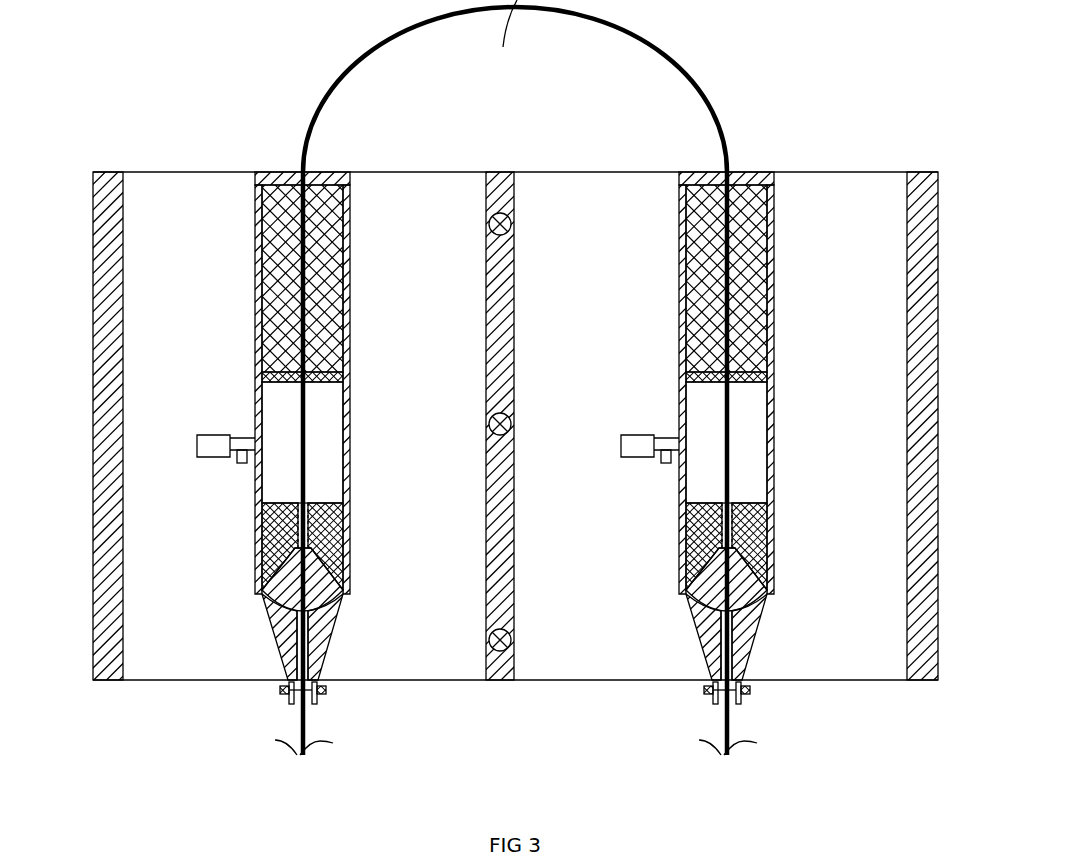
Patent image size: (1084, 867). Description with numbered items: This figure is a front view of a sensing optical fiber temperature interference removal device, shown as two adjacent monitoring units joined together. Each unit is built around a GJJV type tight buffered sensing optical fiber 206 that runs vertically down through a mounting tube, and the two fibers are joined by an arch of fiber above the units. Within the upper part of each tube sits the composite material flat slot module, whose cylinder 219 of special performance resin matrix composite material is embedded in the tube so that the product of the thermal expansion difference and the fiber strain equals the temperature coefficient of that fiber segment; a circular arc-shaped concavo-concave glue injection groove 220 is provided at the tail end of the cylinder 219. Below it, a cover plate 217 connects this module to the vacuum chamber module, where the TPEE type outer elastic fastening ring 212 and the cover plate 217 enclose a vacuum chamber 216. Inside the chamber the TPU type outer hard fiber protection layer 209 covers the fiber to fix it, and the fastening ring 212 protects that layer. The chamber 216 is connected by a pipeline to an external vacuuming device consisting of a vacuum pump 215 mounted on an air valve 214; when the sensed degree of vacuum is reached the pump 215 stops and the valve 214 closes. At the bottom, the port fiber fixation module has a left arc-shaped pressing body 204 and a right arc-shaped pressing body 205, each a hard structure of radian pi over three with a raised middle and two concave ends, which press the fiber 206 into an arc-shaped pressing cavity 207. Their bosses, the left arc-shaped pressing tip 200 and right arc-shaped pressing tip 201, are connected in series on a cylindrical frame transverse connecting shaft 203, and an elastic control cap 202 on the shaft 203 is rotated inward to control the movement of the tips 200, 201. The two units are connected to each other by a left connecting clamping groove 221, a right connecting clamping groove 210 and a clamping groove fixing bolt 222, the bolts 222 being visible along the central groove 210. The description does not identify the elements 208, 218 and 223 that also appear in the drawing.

The left arc-shaped pressing tip 200 is at (291, 701).
The right arc-shaped pressing tip 201 is at (316, 701).
The elastic control cap 202 is at (282, 690).
The frame transverse connecting shaft 203 is at (322, 690).
The left arc-shaped pressing body 204 is at (277, 638).
The right arc-shaped pressing body 205 is at (323, 638).
The GJJV type tight buffered sensing optical fiber 206 is at (297, 753).
The arc-shaped pressing cavity 207 is at (305, 617).
The funnel block 208 is at (280, 590).
The TPU type outer hard fiber protection layer 209 is at (316, 538).
The right connecting clamping groove 210 is at (493, 355).
The TPEE type outer elastic fastening ring 212 is at (343, 527).
The air valve 214 is at (240, 467).
The vacuum pump 215 is at (215, 445).
The vacuum chamber 216 is at (327, 425).
The cover plate 217 is at (277, 374).
The housing wall 218 is at (262, 186).
The cylinder made of special composite material 219 is at (273, 272).
The circular arc-shaped concavo-concave glue injection groove 220 is at (308, 184).
The left connecting clamping groove 221 is at (105, 174).
The clamping groove fixing bolt 222 is at (490, 425).
The base plate 223 is at (173, 681).